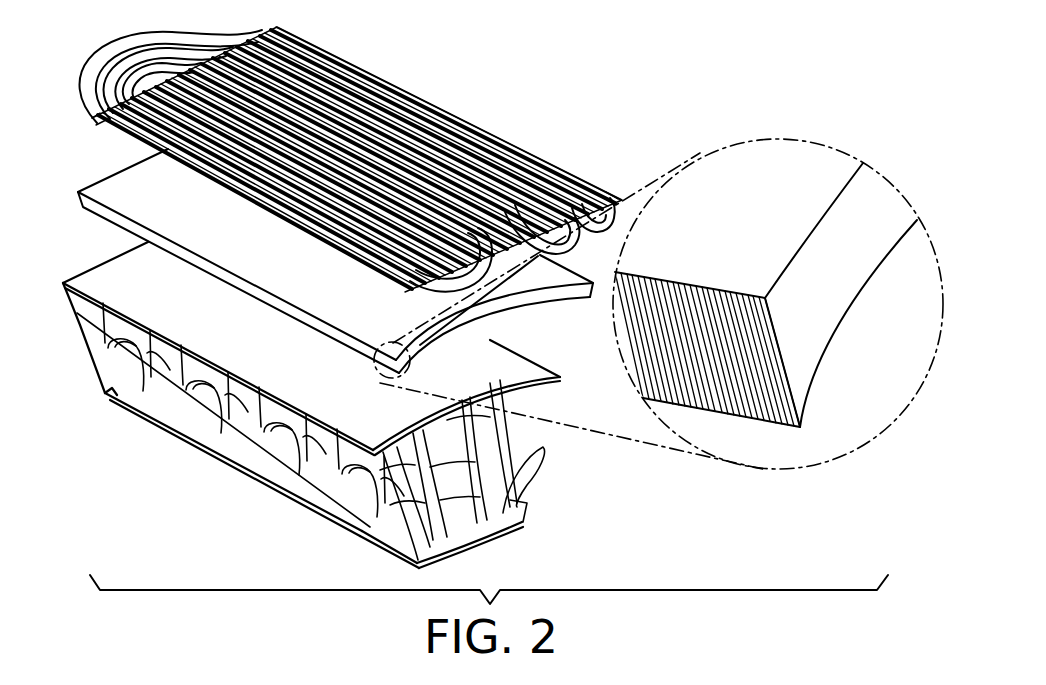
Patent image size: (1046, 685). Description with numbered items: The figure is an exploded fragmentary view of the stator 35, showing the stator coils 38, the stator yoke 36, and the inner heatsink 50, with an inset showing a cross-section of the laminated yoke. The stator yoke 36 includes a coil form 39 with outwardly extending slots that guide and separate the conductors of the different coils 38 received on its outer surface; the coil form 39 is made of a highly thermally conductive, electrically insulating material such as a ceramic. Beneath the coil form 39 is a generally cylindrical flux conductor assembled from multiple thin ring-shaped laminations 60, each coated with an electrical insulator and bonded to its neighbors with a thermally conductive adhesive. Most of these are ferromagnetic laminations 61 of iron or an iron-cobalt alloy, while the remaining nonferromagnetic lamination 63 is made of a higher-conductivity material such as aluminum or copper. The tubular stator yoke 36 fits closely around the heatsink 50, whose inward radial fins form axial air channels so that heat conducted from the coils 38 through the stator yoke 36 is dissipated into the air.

The stator 35 is at (541, 92).
The stator yoke 36 is at (108, 168).
The coils 38 is at (600, 195).
The coil form 39 is at (90, 128).
The heatsink 50 is at (248, 458).
The laminations 60 is at (676, 383).
The ferromagnetic laminations 61 is at (723, 400).
The nonferromagnetic lamination 63 is at (765, 423).